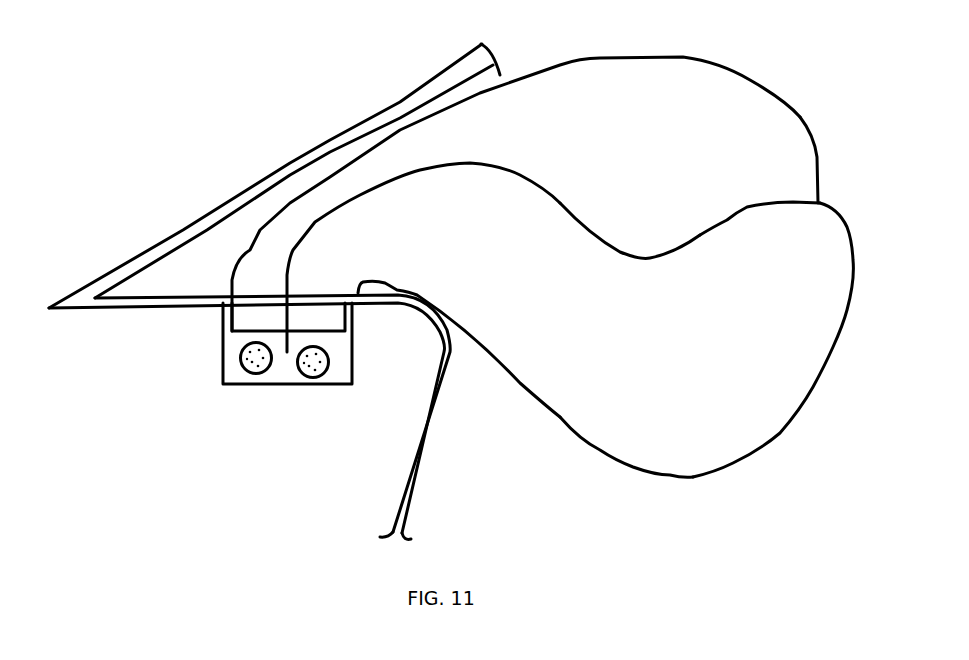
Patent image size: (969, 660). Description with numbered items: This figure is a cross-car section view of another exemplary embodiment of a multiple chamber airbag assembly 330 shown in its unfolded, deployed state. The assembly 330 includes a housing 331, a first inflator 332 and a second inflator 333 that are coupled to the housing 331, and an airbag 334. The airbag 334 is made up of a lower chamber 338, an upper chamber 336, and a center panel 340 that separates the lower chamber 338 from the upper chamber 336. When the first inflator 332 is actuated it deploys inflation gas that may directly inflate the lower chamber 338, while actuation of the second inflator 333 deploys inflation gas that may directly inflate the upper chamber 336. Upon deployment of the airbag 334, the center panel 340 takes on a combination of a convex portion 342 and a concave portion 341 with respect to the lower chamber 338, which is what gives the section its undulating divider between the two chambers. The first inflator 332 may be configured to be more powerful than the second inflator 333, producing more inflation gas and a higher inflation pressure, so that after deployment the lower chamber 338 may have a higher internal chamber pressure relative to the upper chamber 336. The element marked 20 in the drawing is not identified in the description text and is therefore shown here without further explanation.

The surgical blade / shaver 20 is at (172, 89).
The multiple chamber airbag assembly 330 is at (252, 395).
The housing 331 is at (230, 373).
The first inflator 332 is at (308, 378).
The second inflator 333 is at (258, 376).
The airbag 334 is at (606, 465).
The upper chamber 336 is at (732, 93).
The lower chamber 338 is at (760, 435).
The center panel 340 is at (772, 200).
The concave portion 341 is at (661, 228).
The convex portion 342 is at (466, 172).